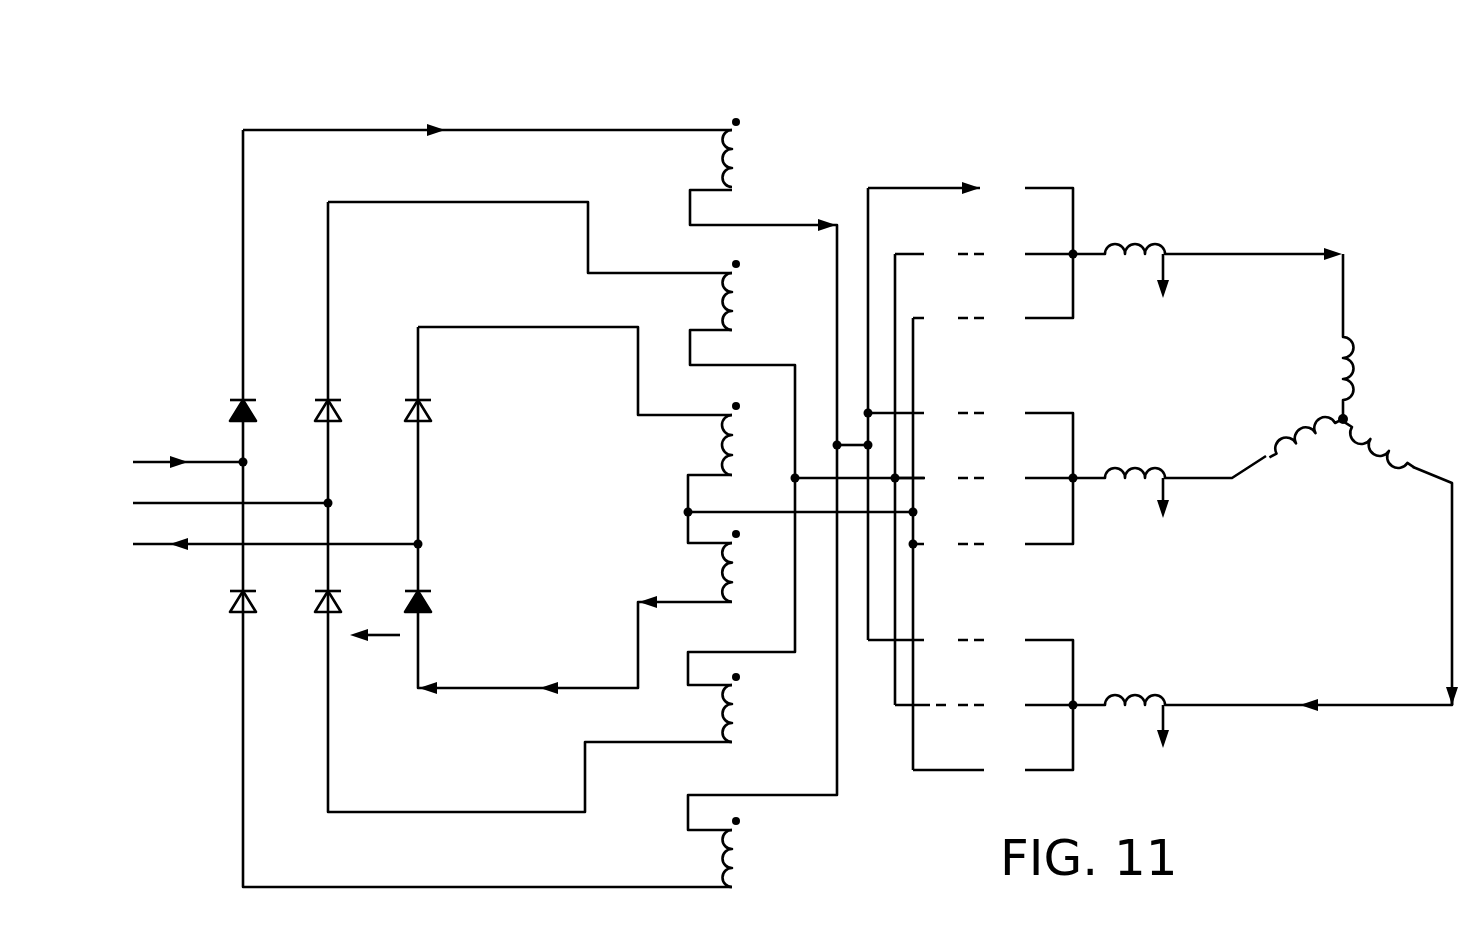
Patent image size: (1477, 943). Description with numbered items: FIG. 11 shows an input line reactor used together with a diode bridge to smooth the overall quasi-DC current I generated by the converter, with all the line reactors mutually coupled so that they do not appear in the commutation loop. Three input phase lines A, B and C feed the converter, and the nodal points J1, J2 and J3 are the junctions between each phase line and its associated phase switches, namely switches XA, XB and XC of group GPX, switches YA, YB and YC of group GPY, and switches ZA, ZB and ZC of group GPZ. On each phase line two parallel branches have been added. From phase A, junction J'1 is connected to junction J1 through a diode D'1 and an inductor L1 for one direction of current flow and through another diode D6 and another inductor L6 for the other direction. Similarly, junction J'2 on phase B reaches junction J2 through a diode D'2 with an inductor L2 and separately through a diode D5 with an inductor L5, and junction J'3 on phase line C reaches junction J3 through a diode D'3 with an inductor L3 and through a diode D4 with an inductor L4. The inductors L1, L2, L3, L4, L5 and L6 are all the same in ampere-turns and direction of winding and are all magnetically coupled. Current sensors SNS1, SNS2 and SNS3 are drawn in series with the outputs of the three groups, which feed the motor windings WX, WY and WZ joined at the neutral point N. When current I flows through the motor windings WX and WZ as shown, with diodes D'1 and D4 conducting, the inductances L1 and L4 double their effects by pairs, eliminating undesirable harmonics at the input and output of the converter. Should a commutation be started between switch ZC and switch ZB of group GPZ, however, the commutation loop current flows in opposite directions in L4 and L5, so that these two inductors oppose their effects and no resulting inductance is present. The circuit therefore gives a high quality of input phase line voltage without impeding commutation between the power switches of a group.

The diode D'1 is at (217, 398).
The diode D'2 is at (304, 398).
The diode D'3 is at (437, 398).
The diode D4 is at (430, 603).
The diode D5 is at (316, 603).
The diode D6 is at (228, 603).
The junction J'1 is at (260, 465).
The junction J'2 is at (352, 494).
The junction J'3 is at (442, 554).
The nodal point J1 is at (837, 445).
The nodal point J2 is at (795, 478).
The nodal point J3 is at (688, 512).
The inductor L1 is at (747, 152).
The inductor L2 is at (747, 295).
The inductor L3 is at (746, 438).
The inductor L4 is at (746, 566).
The inductor L5 is at (747, 707).
The inductor L6 is at (747, 852).
The phase line A is at (857, 445).
The phase line B is at (828, 478).
The phase line C is at (828, 512).
The current I is at (904, 401).
The group GPX is at (1022, 160).
The group GPY is at (1022, 387).
The group GPZ is at (1022, 610).
The phase switch XA is at (924, 179).
The phase switch XB is at (939, 254).
The phase switch XC is at (948, 318).
The phase switch YA is at (924, 426).
The phase switch YB is at (938, 478).
The phase switch YC is at (947, 532).
The phase switch ZA is at (926, 640).
The phase switch ZB is at (939, 692).
The phase switch ZC is at (948, 788).
The current sensor SNS1 is at (1140, 252).
The current sensor SNS2 is at (1140, 476).
The current sensor SNS3 is at (1140, 703).
The motor winding WX is at (1360, 367).
The motor winding WY is at (1293, 437).
The motor winding WZ is at (1392, 452).
The neutral point N is at (1348, 417).